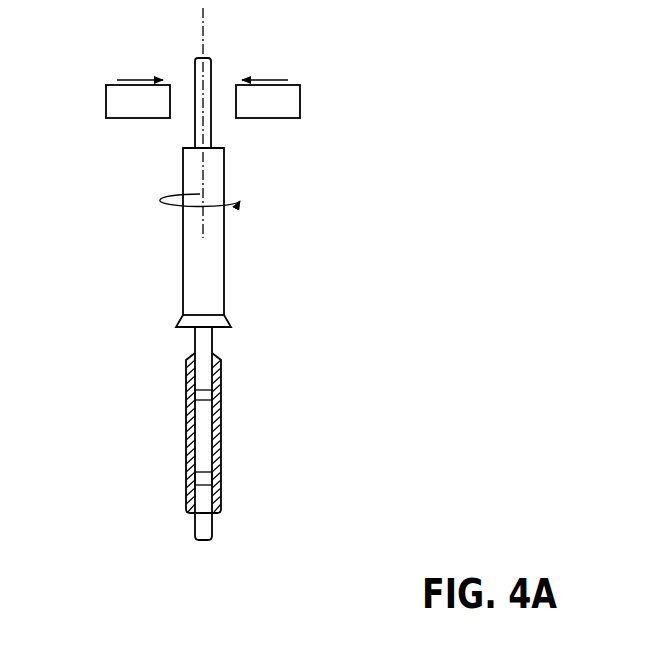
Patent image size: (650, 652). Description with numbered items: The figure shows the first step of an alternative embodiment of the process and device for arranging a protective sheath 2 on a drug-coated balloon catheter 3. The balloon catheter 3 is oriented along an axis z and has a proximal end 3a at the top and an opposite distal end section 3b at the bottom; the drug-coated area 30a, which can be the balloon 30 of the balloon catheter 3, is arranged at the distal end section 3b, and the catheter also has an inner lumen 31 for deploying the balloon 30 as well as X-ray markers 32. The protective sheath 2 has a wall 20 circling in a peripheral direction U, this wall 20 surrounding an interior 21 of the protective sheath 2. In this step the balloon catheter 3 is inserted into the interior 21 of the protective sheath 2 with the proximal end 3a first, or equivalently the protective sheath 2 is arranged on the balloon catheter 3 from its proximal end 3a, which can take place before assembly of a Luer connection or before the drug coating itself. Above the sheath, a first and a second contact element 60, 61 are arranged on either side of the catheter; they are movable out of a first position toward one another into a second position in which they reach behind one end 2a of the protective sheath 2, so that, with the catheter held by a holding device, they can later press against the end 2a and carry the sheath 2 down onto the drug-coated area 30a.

The protective sheath 2 is at (158, 263).
The end of the protective sheath 2a is at (183, 152).
The balloon catheter 3 is at (211, 445).
The proximal end 3a is at (197, 60).
The distal end section 3b is at (213, 537).
The wall 20 is at (188, 247).
The interior 21 is at (186, 331).
The balloon 30 is at (200, 478).
The drug-coated area 30a is at (222, 425).
The inner lumen 31 is at (200, 500).
The X-ray markers 32 is at (202, 395).
The first contact element 60 is at (115, 103).
The second contact element 61 is at (292, 103).
The peripheral direction U is at (211, 206).
The axis z is at (205, 27).